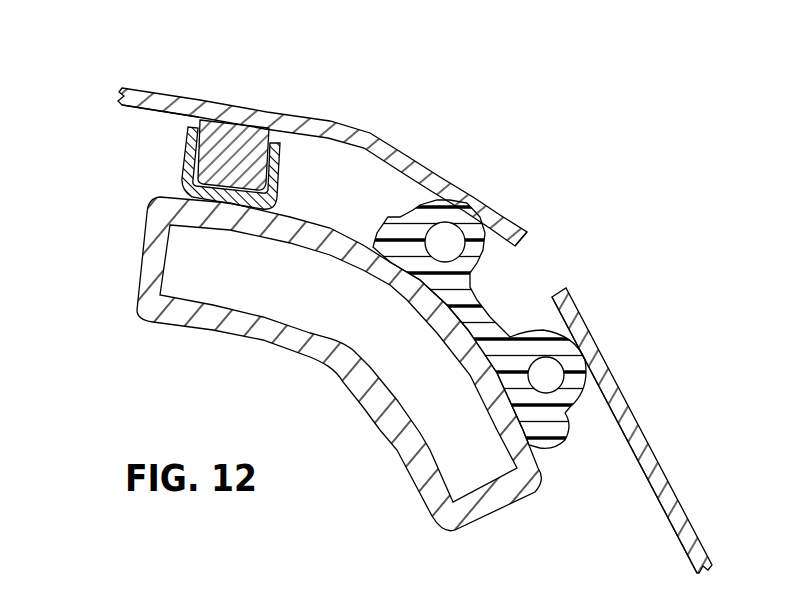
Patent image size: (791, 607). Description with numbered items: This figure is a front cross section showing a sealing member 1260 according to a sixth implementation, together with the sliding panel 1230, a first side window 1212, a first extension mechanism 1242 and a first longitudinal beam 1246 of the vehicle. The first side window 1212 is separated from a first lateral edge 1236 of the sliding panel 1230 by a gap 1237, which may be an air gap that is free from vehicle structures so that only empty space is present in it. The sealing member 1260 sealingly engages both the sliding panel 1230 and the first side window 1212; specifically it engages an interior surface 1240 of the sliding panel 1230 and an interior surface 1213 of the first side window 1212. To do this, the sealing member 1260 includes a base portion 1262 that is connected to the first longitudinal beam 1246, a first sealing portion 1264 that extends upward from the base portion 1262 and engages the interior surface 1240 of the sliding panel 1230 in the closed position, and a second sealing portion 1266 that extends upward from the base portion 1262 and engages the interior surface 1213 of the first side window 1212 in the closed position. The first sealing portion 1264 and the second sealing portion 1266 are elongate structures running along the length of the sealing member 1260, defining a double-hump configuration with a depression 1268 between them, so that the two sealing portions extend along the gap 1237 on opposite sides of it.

The first side window 1212 is at (670, 483).
The interior surface of the first side window 1213 is at (660, 505).
The sliding panel 1230 is at (244, 105).
The first lateral edge 1236 is at (530, 231).
The gap 1237 is at (550, 253).
The interior surface of the sliding panel 1240 is at (140, 110).
The first extension mechanism 1242 is at (186, 148).
The first longitudinal beam 1246 is at (137, 263).
The sealing member 1260 is at (561, 447).
The base portion 1262 is at (385, 216).
The first sealing portion 1264 is at (441, 199).
The second sealing portion 1266 is at (583, 408).
The depression 1268 is at (510, 297).